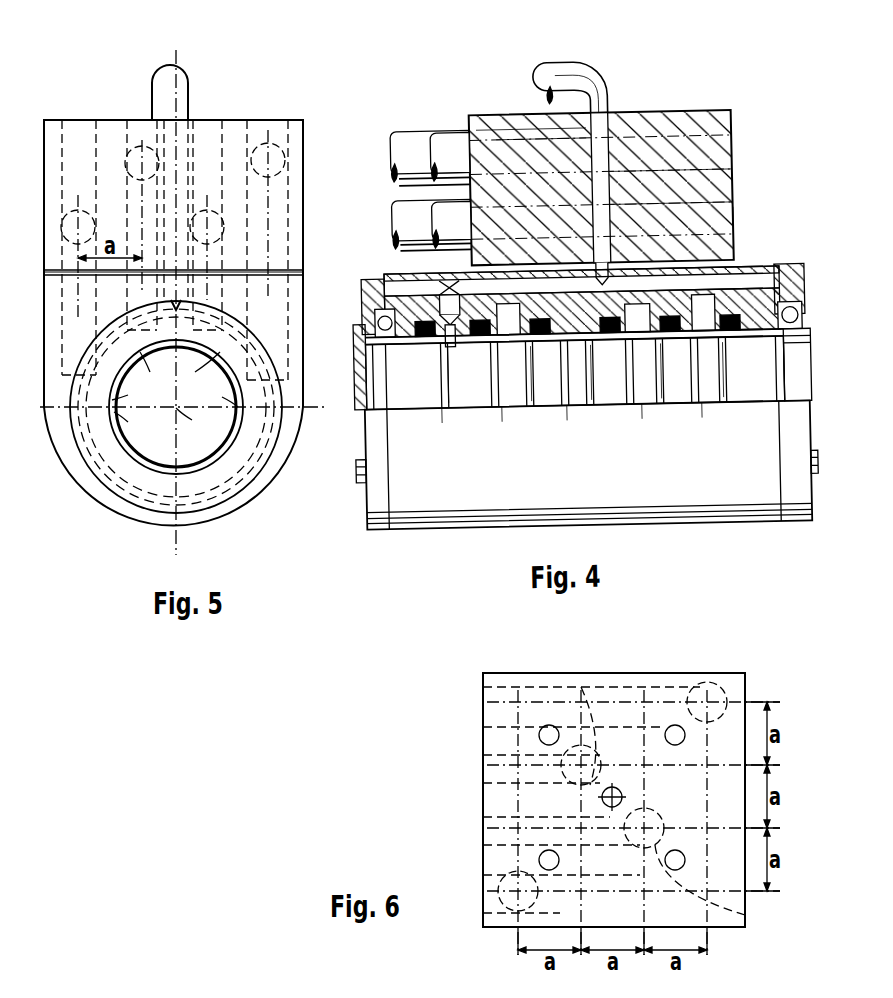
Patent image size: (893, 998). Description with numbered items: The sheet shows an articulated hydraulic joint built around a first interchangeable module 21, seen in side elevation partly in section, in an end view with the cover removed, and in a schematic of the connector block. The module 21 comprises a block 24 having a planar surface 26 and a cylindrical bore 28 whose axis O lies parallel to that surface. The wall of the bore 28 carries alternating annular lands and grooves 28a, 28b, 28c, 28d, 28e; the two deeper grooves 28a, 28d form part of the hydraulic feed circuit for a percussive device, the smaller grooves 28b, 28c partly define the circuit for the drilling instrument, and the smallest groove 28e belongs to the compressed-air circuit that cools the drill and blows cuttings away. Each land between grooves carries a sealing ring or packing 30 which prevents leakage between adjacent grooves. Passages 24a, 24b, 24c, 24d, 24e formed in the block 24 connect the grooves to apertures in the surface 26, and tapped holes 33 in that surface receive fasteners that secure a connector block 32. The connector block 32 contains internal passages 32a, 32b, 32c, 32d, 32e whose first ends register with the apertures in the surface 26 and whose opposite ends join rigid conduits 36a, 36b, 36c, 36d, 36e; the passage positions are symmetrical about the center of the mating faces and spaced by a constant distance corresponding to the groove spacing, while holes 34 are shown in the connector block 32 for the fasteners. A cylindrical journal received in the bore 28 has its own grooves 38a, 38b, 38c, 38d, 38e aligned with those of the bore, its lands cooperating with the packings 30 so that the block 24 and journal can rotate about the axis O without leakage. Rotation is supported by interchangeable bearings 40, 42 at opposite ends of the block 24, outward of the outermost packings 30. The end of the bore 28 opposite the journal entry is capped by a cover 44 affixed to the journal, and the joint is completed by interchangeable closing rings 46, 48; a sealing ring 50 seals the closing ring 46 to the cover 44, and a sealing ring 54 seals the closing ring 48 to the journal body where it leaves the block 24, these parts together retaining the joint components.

In FIG. 5, the interchangeable element or module 21 is at (124, 538).
In FIG. 4, the interchangeable element or module 21 is at (428, 533).
In FIG. 5, the block 24 is at (240, 505).
In FIG. 4, the block 24 is at (750, 527).
In FIG. 5, the passage 24a is at (213, 393).
In FIG. 4, the passage 24a is at (724, 347).
In FIG. 5, the passage 24b is at (198, 368).
In FIG. 4, the passage 24b is at (655, 346).
In FIG. 5, the passage 24c is at (134, 393).
In FIG. 4, the passage 24c is at (585, 346).
In FIG. 5, the passage 24d is at (137, 426).
In FIG. 4, the passage 24d is at (518, 346).
In FIG. 5, the passage 24e is at (153, 368).
In FIG. 4, the passage 24e is at (455, 346).
In FIG. 5, the planar surface 26 is at (303, 270).
In FIG. 4, the planar surface 26 is at (736, 252).
In FIG. 5, the cylindrical bore 28 is at (132, 462).
In FIG. 4, the groove 28a is at (705, 345).
In FIG. 4, the groove 28b is at (668, 345).
In FIG. 4, the groove 28c is at (610, 345).
In FIG. 4, the groove 28d is at (545, 345).
In FIG. 4, the groove 28e is at (475, 345).
In FIG. 4, the sealing ring or packing 30 is at (430, 335).
In FIG. 5, the connector block 32 is at (250, 118).
In FIG. 4, the connector block 32 is at (624, 106).
In FIG. 6, the connector block 32 is at (478, 738).
In FIG. 5, the internal passage 32a is at (272, 145).
In FIG. 4, the internal passage 32a is at (722, 188).
In FIG. 6, the internal passage 32a is at (712, 684).
In FIG. 5, the internal passage 32b is at (207, 212).
In FIG. 4, the internal passage 32b is at (690, 142).
In FIG. 6, the internal passage 32b is at (660, 846).
In FIG. 5, the internal passage 32c is at (142, 150).
In FIG. 4, the internal passage 32c is at (524, 130).
In FIG. 6, the internal passage 32c is at (590, 690).
In FIG. 5, the internal passage 32d is at (78, 212).
In FIG. 4, the internal passage 32d is at (484, 130).
In FIG. 6, the internal passage 32d is at (498, 893).
In FIG. 5, the internal passage 32e is at (188, 128).
In FIG. 4, the internal passage 32e is at (612, 125).
In FIG. 6, the internal passage 32e is at (612, 787).
In FIG. 4, the tapped holes 33 is at (736, 218).
In FIG. 6, the fastening holes 34 is at (675, 725).
In FIG. 4, the rigid conduit 36a is at (397, 146).
In FIG. 4, the rigid conduit 36b is at (400, 205).
In FIG. 4, the rigid conduit 36c is at (445, 140).
In FIG. 4, the rigid conduit 36d is at (432, 210).
In FIG. 4, the rigid conduit 36e is at (556, 62).
In FIG. 4, the groove of journal 38a is at (700, 406).
In FIG. 4, the groove of journal 38b is at (640, 406).
In FIG. 4, the groove of journal 38c is at (565, 406).
In FIG. 4, the groove of journal 38d is at (500, 406).
In FIG. 4, the groove of journal 38e is at (440, 406).
In FIG. 4, the bearing 40 is at (380, 272).
In FIG. 4, the bearing 42 is at (790, 310).
In FIG. 4, the cover 44 is at (358, 396).
In FIG. 4, the closing ring 46 is at (362, 284).
In FIG. 4, the closing ring 48 is at (790, 270).
In FIG. 4, the sealing ring 50 is at (376, 316).
In FIG. 4, the sealing ring 54 is at (798, 370).
In FIG. 5, the axis O is at (189, 425).